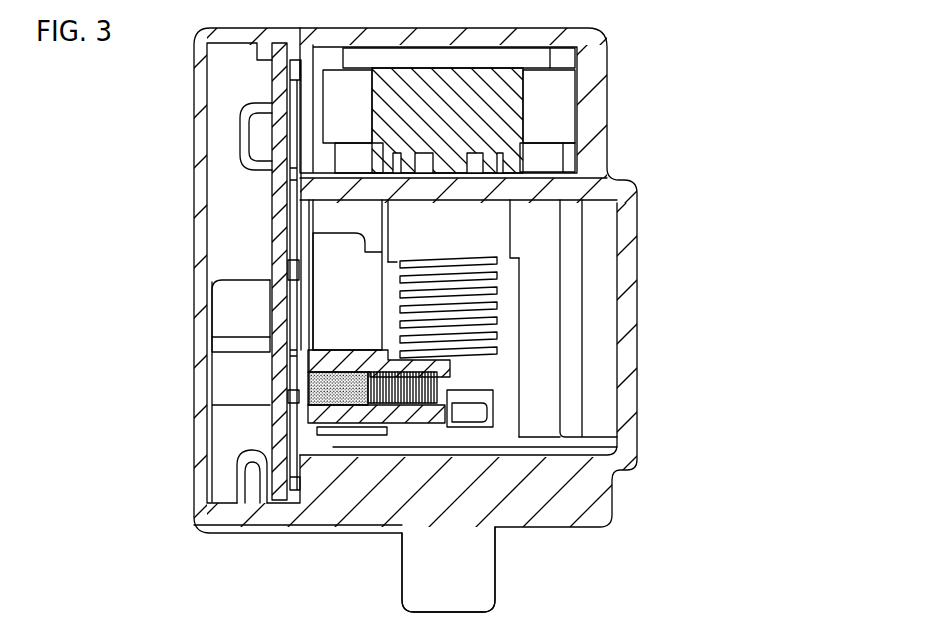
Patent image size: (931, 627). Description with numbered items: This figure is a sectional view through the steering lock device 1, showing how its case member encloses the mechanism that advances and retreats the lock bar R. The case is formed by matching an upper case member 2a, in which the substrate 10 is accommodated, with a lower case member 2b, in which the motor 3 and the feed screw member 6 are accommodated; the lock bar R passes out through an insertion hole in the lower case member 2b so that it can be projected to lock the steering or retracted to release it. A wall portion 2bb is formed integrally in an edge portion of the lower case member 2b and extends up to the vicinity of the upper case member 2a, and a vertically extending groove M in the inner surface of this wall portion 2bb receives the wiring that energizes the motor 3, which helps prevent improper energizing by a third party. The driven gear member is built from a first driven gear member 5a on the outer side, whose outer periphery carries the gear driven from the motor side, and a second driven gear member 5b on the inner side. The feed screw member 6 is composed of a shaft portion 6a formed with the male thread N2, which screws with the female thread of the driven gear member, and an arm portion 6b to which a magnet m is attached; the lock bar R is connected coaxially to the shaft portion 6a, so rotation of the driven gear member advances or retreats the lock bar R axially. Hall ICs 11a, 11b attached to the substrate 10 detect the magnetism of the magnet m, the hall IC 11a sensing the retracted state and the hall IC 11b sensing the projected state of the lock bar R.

The steering lock device 1 is at (74, 199).
The upper case member 2a is at (195, 137).
The lower case member 2b is at (633, 437).
The wall portion 2bb is at (223, 313).
The motor 3 is at (555, 400).
The first driven gear member 5a is at (520, 120).
The second driven gear member 5b is at (500, 228).
The feed screw member 6 is at (507, 332).
The shaft portion 6a is at (500, 293).
The arm portion 6b is at (380, 420).
The substrate 10 is at (270, 88).
The hall IC 11a is at (290, 270).
The hall IC 11b is at (278, 394).
The groove M is at (222, 340).
The magnet m is at (322, 400).
The male thread N2 is at (493, 270).
The lock bar R is at (492, 590).